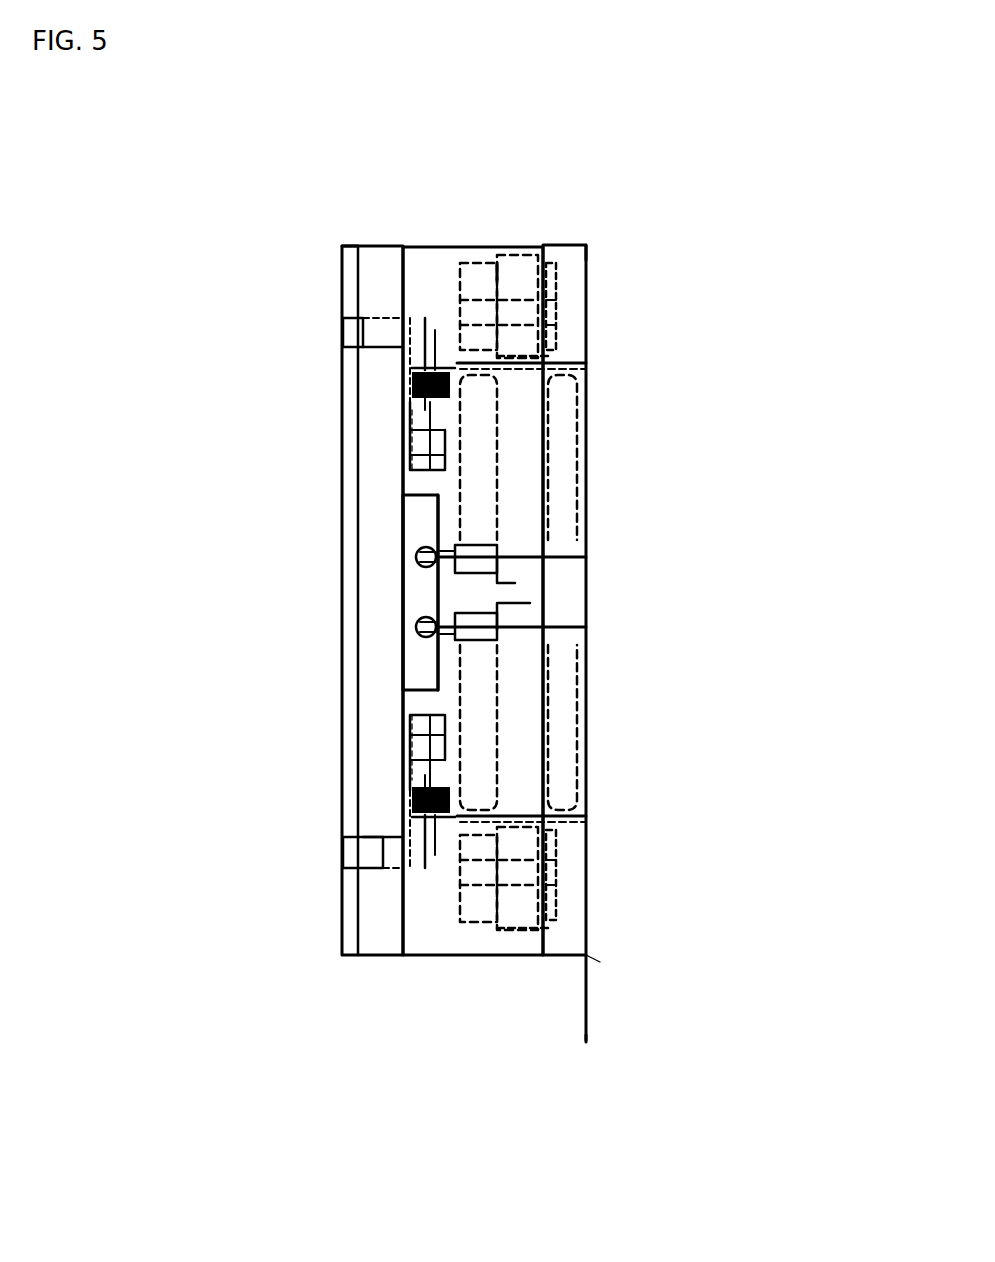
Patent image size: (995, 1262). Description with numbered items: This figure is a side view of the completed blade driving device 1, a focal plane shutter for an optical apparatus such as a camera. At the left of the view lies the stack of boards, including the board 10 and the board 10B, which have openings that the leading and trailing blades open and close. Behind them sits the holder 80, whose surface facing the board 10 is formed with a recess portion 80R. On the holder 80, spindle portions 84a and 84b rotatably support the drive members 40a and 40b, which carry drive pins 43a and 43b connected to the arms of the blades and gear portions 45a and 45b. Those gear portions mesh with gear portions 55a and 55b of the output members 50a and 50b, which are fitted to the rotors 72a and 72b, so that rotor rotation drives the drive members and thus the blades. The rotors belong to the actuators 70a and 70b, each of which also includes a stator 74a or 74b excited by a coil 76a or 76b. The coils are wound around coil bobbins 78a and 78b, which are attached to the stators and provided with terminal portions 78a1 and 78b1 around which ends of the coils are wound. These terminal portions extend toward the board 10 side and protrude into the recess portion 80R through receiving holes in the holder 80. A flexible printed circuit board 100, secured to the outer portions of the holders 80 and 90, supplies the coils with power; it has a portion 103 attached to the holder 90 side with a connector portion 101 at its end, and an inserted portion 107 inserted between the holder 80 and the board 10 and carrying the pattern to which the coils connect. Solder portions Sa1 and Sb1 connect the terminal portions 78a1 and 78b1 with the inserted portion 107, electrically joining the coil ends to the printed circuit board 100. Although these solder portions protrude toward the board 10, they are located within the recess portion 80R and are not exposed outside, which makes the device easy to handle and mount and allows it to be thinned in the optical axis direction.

The blade driving device 1 is at (605, 192).
The board 10 is at (383, 244).
The board 10B is at (340, 258).
The drive member 40a is at (382, 350).
The drive member 40b is at (372, 872).
The drive pin 43a is at (345, 320).
The drive pin 43b is at (345, 852).
The gear portion 45a is at (412, 388).
The gear portion 45b is at (412, 798).
The gear portion 55a is at (338, 392).
The gear portion 55b is at (338, 798).
The output member 50a is at (480, 258).
The output member 50b is at (476, 958).
The actuator 70a is at (560, 278).
The actuator 70b is at (560, 888).
The rotor 72a is at (556, 340).
The rotor 72b is at (560, 903).
The stator 74a is at (540, 592).
The stator 74b is at (537, 606).
The coil 76a is at (565, 442).
The coil 76b is at (565, 714).
The coil bobbin 78a is at (590, 362).
The coil bobbin 78b is at (590, 818).
The terminal portion 78a1 is at (420, 522).
The terminal portion 78b1 is at (420, 660).
The holder 80 is at (417, 958).
The recess portion 80R is at (410, 680).
The spindle portion 84a is at (410, 445).
The spindle portion 84b is at (410, 730).
The holder 90 is at (553, 958).
The printed circuit board 100 is at (590, 990).
The connector portion 101 is at (587, 1042).
The portion 103 is at (600, 962).
The inserted portion 107 is at (436, 590).
The solder portion Sa1 is at (416, 555).
The solder portion Sb1 is at (416, 628).